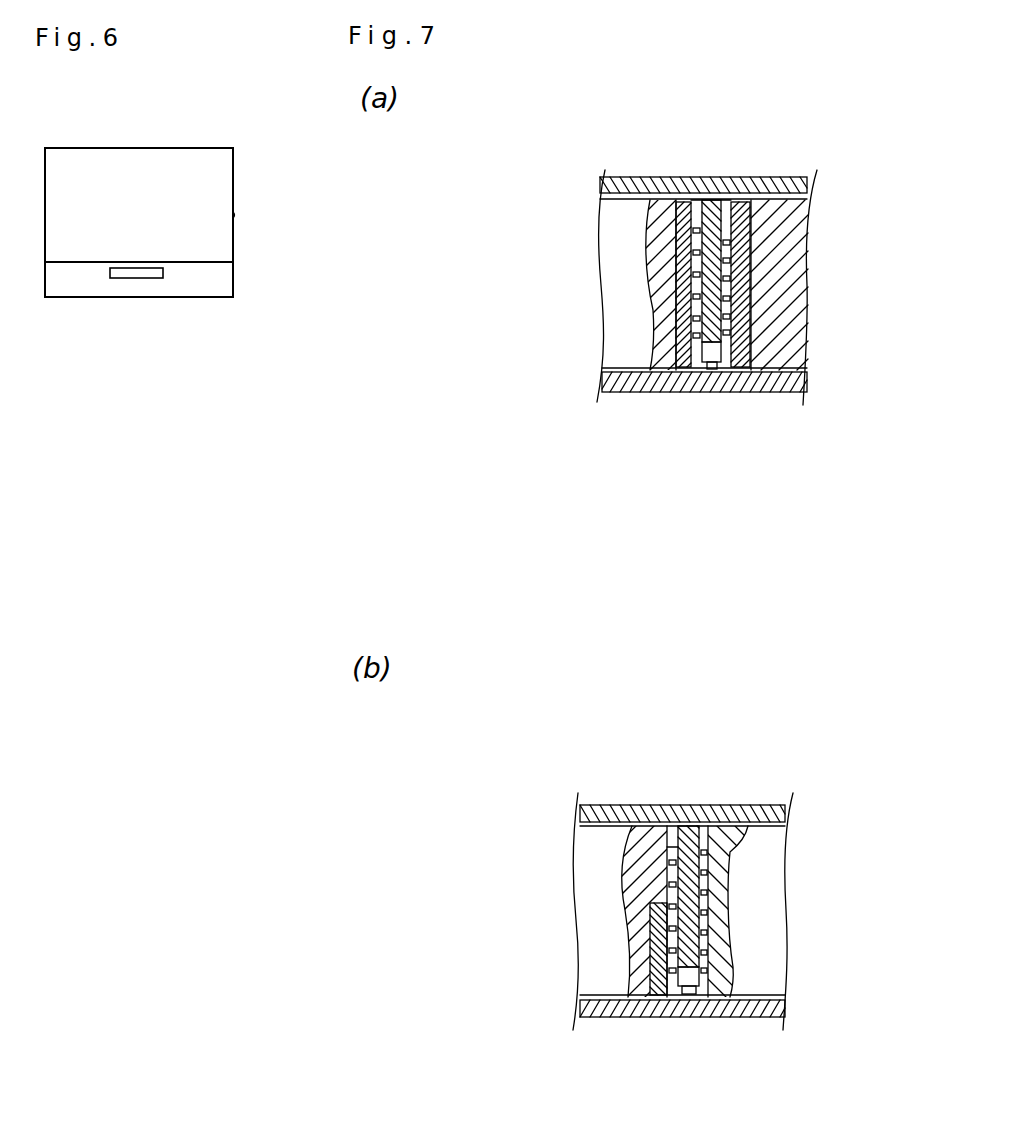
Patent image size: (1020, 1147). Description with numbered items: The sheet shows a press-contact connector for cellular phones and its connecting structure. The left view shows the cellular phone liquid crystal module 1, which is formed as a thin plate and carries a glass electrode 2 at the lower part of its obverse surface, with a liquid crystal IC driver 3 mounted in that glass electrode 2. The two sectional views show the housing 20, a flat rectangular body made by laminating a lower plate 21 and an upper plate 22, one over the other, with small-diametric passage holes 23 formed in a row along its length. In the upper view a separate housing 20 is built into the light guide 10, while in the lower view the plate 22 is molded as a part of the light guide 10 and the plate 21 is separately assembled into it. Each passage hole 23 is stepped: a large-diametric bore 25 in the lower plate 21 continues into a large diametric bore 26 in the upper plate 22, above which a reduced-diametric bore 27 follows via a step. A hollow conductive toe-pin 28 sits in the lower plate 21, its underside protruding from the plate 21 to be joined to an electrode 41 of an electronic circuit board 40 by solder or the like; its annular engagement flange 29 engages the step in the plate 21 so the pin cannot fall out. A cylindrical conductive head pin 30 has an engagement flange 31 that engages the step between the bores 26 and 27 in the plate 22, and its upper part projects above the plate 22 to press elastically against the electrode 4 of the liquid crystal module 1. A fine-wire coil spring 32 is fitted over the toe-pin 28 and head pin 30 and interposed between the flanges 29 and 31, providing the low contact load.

In FIG. 6, the liquid crystal module 1 is at (148, 156).
In FIG. 7, the liquid crystal module 1 is at (648, 178).
In FIG. 6, the glass electrode 2 is at (63, 287).
In FIG. 6, the liquid crystal IC driver 3 is at (146, 278).
In FIG. 7, the electrode 4 is at (685, 826).
In FIG. 7, the light guide 10 is at (797, 258).
In FIG. 7, the housing 20 is at (680, 357).
In FIG. 7, the plate 21 is at (742, 362).
In FIG. 7, the plate 22 is at (750, 182).
In FIG. 7, the passage hole 23 is at (685, 365).
In FIG. 7, the large-diametric bore 25 is at (735, 343).
In FIG. 7, the large diametric bore 26 is at (727, 275).
In FIG. 7, the reduced-diametric bore 27 is at (686, 197).
In FIG. 7, the conductive toe-pin 28 is at (685, 345).
In FIG. 7, the engagement flange 29 is at (692, 333).
In FIG. 7, the conductive head pin 30 is at (714, 196).
In FIG. 7, the engagement flange 31 is at (740, 222).
In FIG. 7, the coil spring 32 is at (707, 277).
In FIG. 7, the electronic circuit board 40 is at (595, 1020).
In FIG. 7, the electrode 41 is at (692, 995).